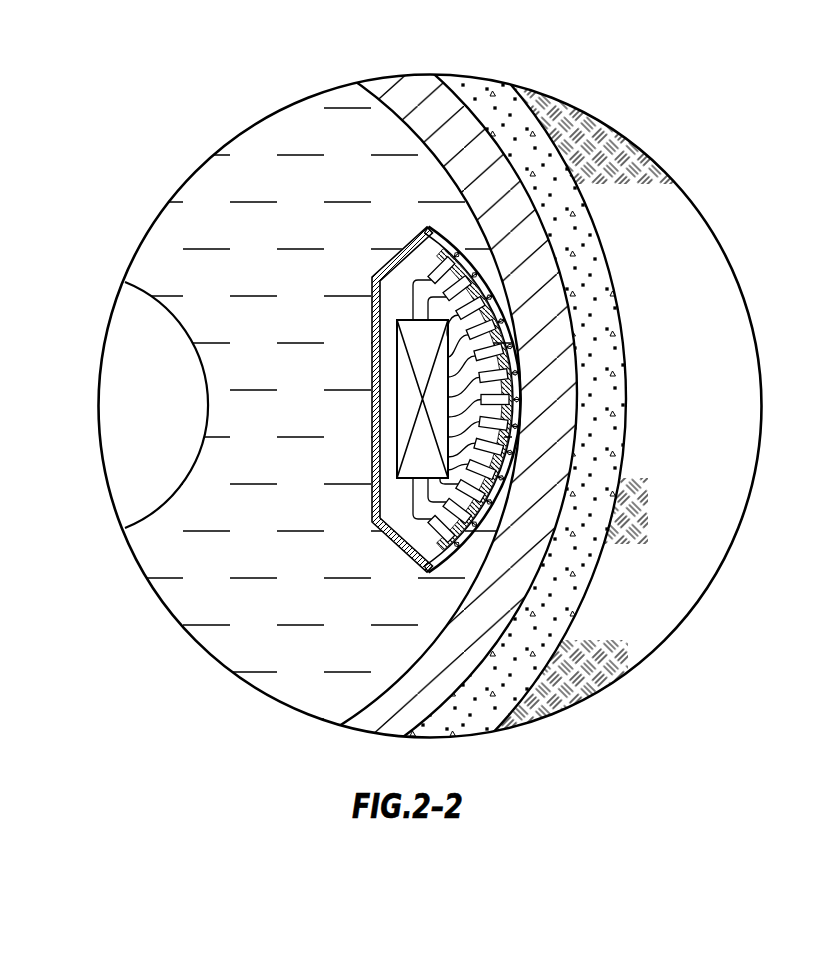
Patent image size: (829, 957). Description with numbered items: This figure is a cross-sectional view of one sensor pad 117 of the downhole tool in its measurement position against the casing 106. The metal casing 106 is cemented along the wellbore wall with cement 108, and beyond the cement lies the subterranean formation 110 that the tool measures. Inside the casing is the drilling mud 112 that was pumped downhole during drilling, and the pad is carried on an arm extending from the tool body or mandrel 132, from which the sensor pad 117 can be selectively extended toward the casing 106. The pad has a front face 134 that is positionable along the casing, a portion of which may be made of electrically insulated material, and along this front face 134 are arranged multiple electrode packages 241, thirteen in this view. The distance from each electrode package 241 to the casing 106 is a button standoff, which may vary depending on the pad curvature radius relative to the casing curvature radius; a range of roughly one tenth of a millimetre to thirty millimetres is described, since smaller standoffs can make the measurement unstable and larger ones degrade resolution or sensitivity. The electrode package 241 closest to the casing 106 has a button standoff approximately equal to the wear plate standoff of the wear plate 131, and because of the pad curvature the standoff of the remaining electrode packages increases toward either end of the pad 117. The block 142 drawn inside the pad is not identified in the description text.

The casing 106 is at (407, 90).
The cement 108 is at (477, 90).
The subterranean formation 110 is at (607, 125).
The drilling mud 112 is at (332, 113).
The body 132 is at (123, 337).
The wear plate 131 is at (596, 599).
The face 134 is at (480, 289).
The electronics module 142 is at (394, 342).
The electrode package 241 is at (393, 249).
The sensor pad 117 is at (356, 376).